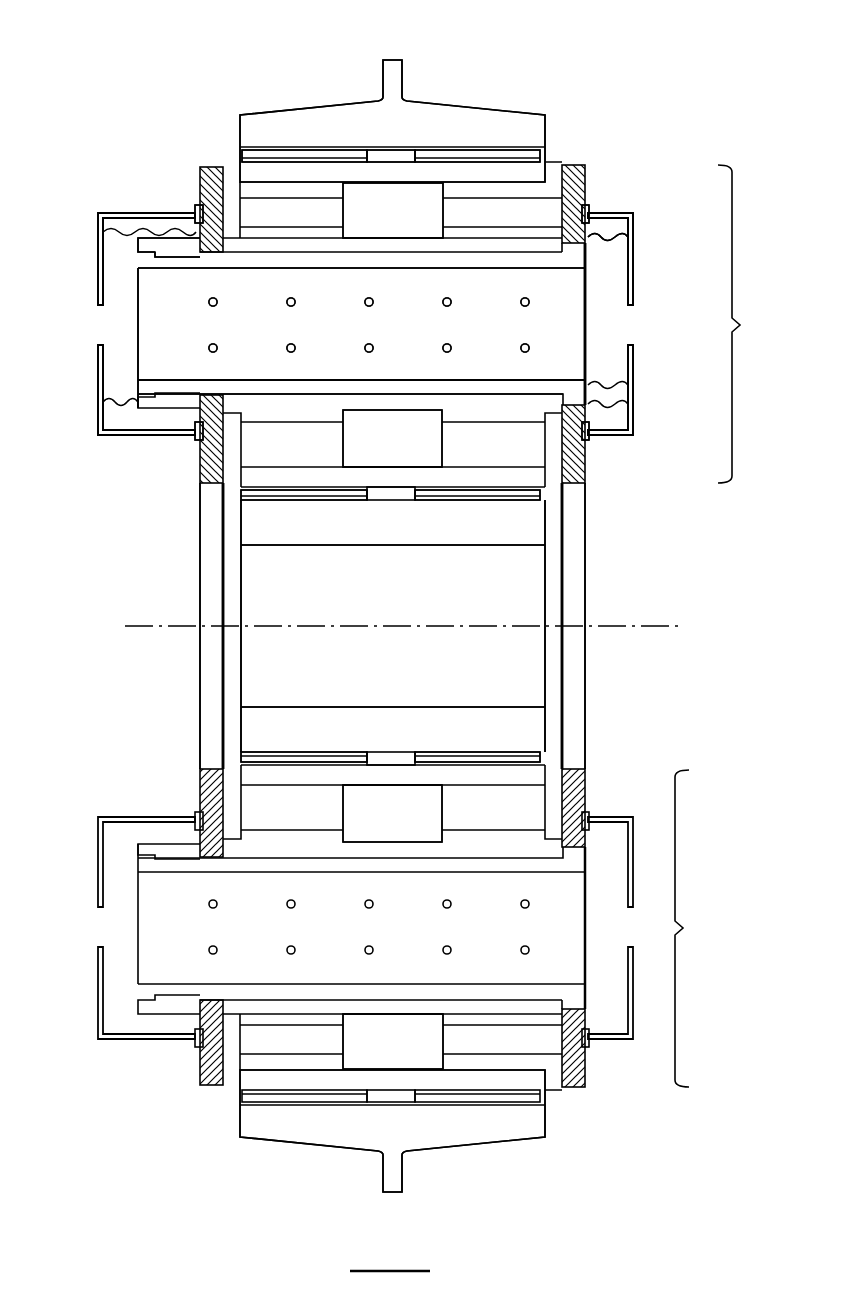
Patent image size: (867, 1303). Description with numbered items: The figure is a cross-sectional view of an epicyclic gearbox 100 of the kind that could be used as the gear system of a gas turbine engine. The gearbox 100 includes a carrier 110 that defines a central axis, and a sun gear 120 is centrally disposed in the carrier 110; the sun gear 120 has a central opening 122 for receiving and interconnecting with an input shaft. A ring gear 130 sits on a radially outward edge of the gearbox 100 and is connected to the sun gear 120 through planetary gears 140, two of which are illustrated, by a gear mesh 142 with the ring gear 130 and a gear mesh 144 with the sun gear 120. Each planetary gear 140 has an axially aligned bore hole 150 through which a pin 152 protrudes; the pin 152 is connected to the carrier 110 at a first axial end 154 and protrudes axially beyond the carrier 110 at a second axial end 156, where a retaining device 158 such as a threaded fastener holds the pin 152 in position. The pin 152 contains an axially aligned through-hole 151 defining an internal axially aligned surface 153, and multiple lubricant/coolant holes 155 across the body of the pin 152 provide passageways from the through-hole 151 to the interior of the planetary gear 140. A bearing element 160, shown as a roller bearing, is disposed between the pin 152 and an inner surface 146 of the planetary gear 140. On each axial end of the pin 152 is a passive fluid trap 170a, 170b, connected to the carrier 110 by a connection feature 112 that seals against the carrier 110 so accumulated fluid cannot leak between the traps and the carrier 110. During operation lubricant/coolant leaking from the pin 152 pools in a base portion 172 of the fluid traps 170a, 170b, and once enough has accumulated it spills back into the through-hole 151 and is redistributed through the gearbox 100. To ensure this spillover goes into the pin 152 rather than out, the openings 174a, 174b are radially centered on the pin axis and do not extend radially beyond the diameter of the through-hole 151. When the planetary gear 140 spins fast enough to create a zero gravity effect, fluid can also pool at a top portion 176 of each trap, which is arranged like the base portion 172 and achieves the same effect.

The epicyclic gearbox 100 is at (664, 96).
The carrier 110 is at (576, 520).
The connection feature 112 is at (198, 206).
The sun gear 120 is at (411, 679).
The central opening 122 is at (533, 588).
The ring gear 130 is at (451, 137).
The planetary gear 140 is at (729, 626).
The gear mesh 142 is at (256, 152).
The gear mesh 144 is at (317, 497).
The inner surface 146 is at (308, 183).
The bore hole 150 is at (607, 233).
The through-hole 151 is at (553, 335).
The pin 152 is at (463, 388).
The internal axially aligned surface 153 is at (381, 337).
The first axial end 154 is at (612, 378).
The lubricant/coolant holes 155 is at (218, 300).
The second axial end 156 is at (152, 247).
The retaining device 158 is at (163, 245).
The bearing element 160 is at (412, 229).
The fluid trap 170a is at (98, 262).
The fluid trap 170b is at (633, 265).
The base portion 172 is at (118, 412).
The opening 174a is at (100, 345).
The opening 174b is at (632, 337).
The top portion 176 is at (122, 232).